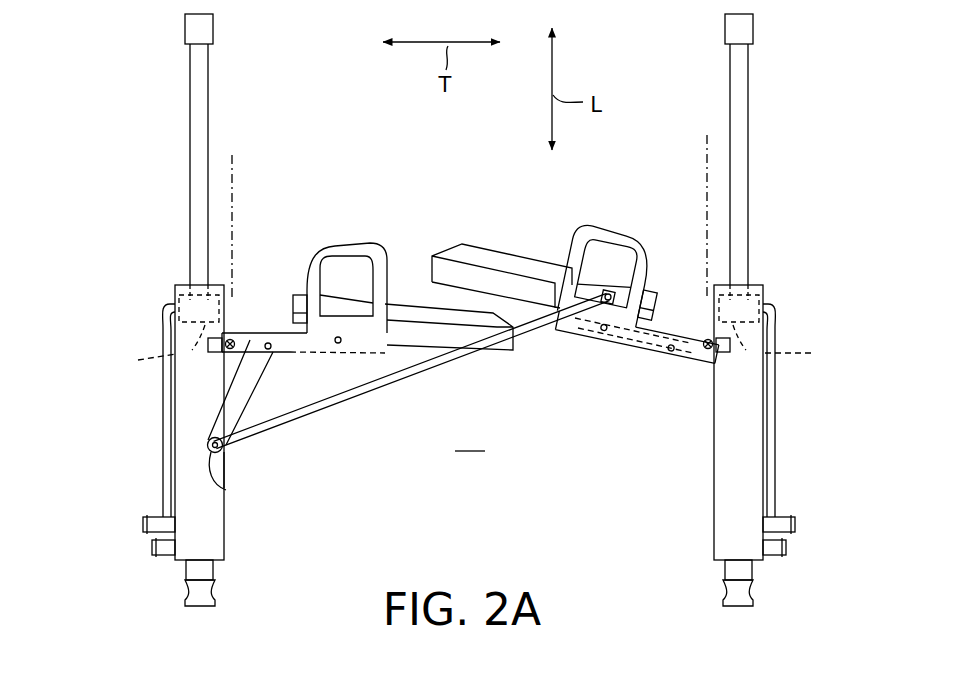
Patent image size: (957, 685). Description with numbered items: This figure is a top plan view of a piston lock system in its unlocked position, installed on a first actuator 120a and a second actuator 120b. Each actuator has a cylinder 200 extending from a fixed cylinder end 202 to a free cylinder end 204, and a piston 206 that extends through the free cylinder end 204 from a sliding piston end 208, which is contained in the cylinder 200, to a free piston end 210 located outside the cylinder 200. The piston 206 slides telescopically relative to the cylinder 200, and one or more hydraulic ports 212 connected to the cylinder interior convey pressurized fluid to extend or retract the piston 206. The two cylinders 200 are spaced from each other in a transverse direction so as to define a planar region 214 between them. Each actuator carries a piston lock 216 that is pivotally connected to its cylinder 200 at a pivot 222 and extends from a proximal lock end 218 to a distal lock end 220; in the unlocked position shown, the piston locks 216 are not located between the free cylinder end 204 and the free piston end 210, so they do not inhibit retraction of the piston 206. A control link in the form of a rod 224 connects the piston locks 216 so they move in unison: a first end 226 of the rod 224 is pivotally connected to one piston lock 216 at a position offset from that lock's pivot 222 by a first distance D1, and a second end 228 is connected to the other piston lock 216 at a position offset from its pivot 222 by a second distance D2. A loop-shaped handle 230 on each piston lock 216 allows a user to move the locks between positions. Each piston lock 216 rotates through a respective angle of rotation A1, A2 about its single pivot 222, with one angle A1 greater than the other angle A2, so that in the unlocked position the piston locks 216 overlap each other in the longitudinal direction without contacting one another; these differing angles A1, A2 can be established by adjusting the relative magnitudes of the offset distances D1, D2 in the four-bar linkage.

The first actuator 120a is at (168, 172).
The second actuator 120b is at (710, 85).
The cylinder 200 is at (193, 423).
The fixed cylinder end 202 is at (198, 592).
The free cylinder end 204 is at (188, 290).
The piston 206 is at (208, 92).
The sliding piston end 208 is at (470, 356).
The free piston end 210 is at (185, 30).
The hydraulic ports 212 is at (152, 546).
The planar region 214 is at (470, 340).
The piston lock 216 is at (400, 306).
The proximal lock end 218 is at (290, 322).
The distal lock end 220 is at (432, 280).
The pivot 222 is at (215, 352).
The rod 224 is at (352, 398).
The first end 226 is at (222, 455).
The second end 228 is at (600, 300).
The handle 230 is at (332, 257).
The angle of rotation A1 is at (400, 350).
The angle of rotation A2 is at (521, 300).
The first distance D1 is at (270, 357).
The second distance D2 is at (596, 318).